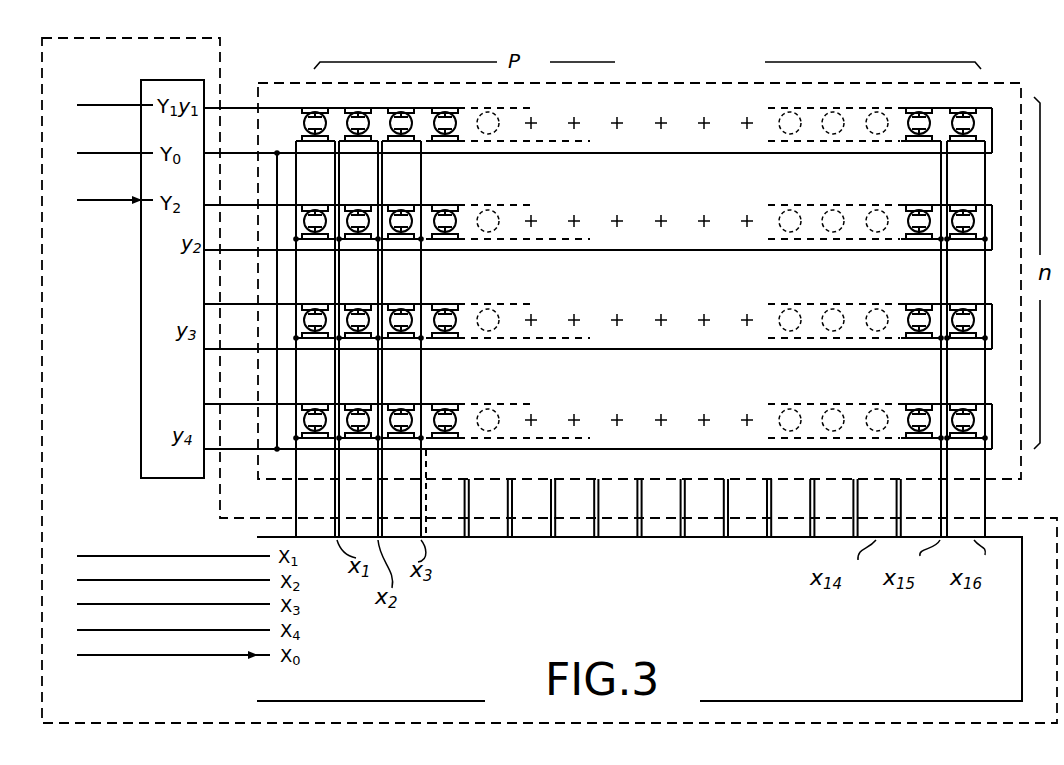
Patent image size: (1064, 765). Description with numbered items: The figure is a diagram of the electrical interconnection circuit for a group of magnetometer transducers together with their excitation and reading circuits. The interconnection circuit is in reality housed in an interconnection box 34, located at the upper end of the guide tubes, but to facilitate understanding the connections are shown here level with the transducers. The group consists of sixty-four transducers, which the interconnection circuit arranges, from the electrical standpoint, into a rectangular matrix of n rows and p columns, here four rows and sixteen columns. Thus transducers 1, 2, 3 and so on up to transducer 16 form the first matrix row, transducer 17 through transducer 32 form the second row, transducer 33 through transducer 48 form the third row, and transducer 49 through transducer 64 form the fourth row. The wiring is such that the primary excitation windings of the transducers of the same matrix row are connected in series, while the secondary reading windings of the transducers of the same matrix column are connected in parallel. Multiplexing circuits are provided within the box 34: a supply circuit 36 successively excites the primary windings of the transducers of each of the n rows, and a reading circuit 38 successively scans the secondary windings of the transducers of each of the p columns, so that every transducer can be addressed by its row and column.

The transducer 1 is at (315, 112).
The transducer 2 is at (358, 112).
The transducer 3 is at (401, 112).
The transducer 16 is at (964, 113).
The transducer 17 is at (315, 209).
The transducer 32 is at (963, 211).
The transducer 33 is at (315, 306).
The transducer 48 is at (963, 307).
The transducer 49 is at (315, 406).
The transducer 64 is at (963, 408).
The interconnection box 34 is at (221, 65).
The supply circuit 36 is at (141, 80).
The reading circuit 38 is at (915, 675).